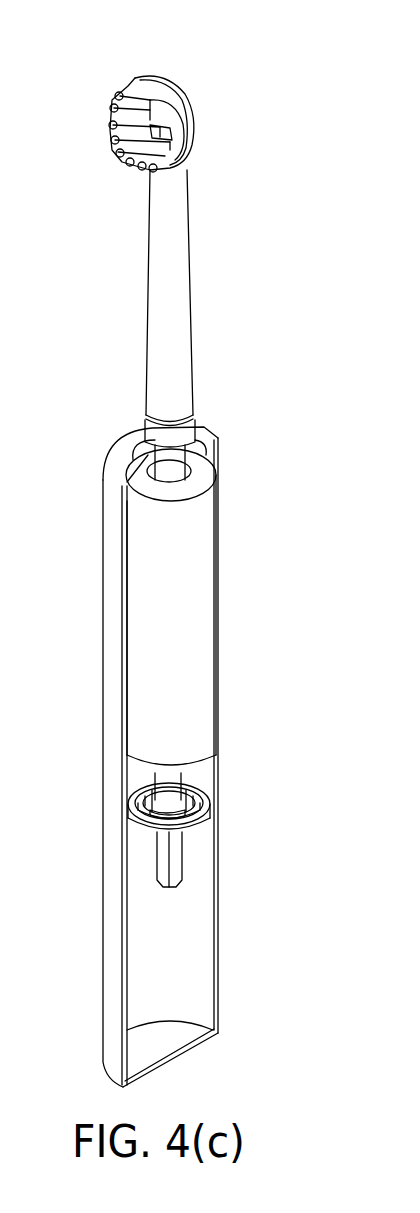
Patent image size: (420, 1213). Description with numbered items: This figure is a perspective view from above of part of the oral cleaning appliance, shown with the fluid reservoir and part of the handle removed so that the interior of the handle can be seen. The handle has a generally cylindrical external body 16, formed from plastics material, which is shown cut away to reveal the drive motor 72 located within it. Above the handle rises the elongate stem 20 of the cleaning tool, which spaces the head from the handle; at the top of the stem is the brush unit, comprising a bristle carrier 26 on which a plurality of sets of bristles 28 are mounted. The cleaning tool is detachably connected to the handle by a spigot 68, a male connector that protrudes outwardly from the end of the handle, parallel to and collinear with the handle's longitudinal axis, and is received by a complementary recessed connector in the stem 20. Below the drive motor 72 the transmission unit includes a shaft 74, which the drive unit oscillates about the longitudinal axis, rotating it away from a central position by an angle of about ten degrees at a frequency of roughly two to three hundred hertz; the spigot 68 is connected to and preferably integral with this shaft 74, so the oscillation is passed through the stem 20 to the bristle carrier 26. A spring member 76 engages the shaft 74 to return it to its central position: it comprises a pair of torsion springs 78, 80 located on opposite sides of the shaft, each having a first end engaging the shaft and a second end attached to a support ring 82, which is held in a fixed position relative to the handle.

The external body 16 is at (108, 582).
The stem 20 is at (157, 348).
The bristle carrier 26 is at (163, 89).
The sets of bristles 28 is at (175, 132).
The spigot 68 is at (178, 468).
The drive motor 72 is at (202, 632).
The shaft 74 is at (170, 776).
The spring member 76 is at (196, 851).
The torsion spring 78 is at (200, 812).
The torsion spring 80 is at (137, 808).
The support ring 82 is at (205, 826).